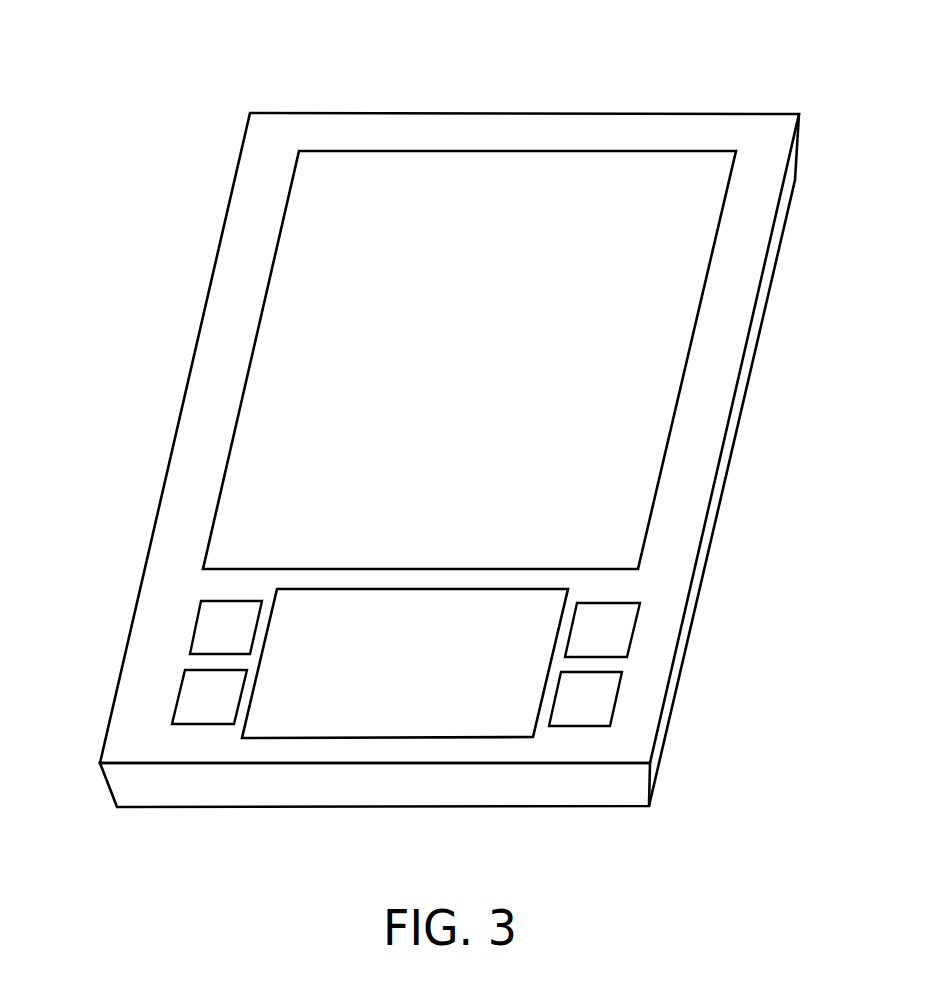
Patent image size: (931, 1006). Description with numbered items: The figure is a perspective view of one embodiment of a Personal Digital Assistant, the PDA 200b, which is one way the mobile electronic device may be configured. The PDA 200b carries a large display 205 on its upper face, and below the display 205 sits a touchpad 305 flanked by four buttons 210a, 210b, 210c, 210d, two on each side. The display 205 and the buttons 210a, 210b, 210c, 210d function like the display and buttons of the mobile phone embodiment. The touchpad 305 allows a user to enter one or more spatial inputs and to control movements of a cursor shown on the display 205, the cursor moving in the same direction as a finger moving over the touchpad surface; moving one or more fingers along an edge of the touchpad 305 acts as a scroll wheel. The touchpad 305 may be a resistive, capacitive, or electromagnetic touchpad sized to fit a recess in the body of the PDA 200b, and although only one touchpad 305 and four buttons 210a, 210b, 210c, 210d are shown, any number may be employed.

The PDA 200b is at (88, 66).
The display 205 is at (448, 381).
The touchpad 305 is at (393, 685).
The button 210a is at (227, 628).
The button 210b is at (626, 638).
The button 210c is at (205, 695).
The button 210d is at (607, 695).